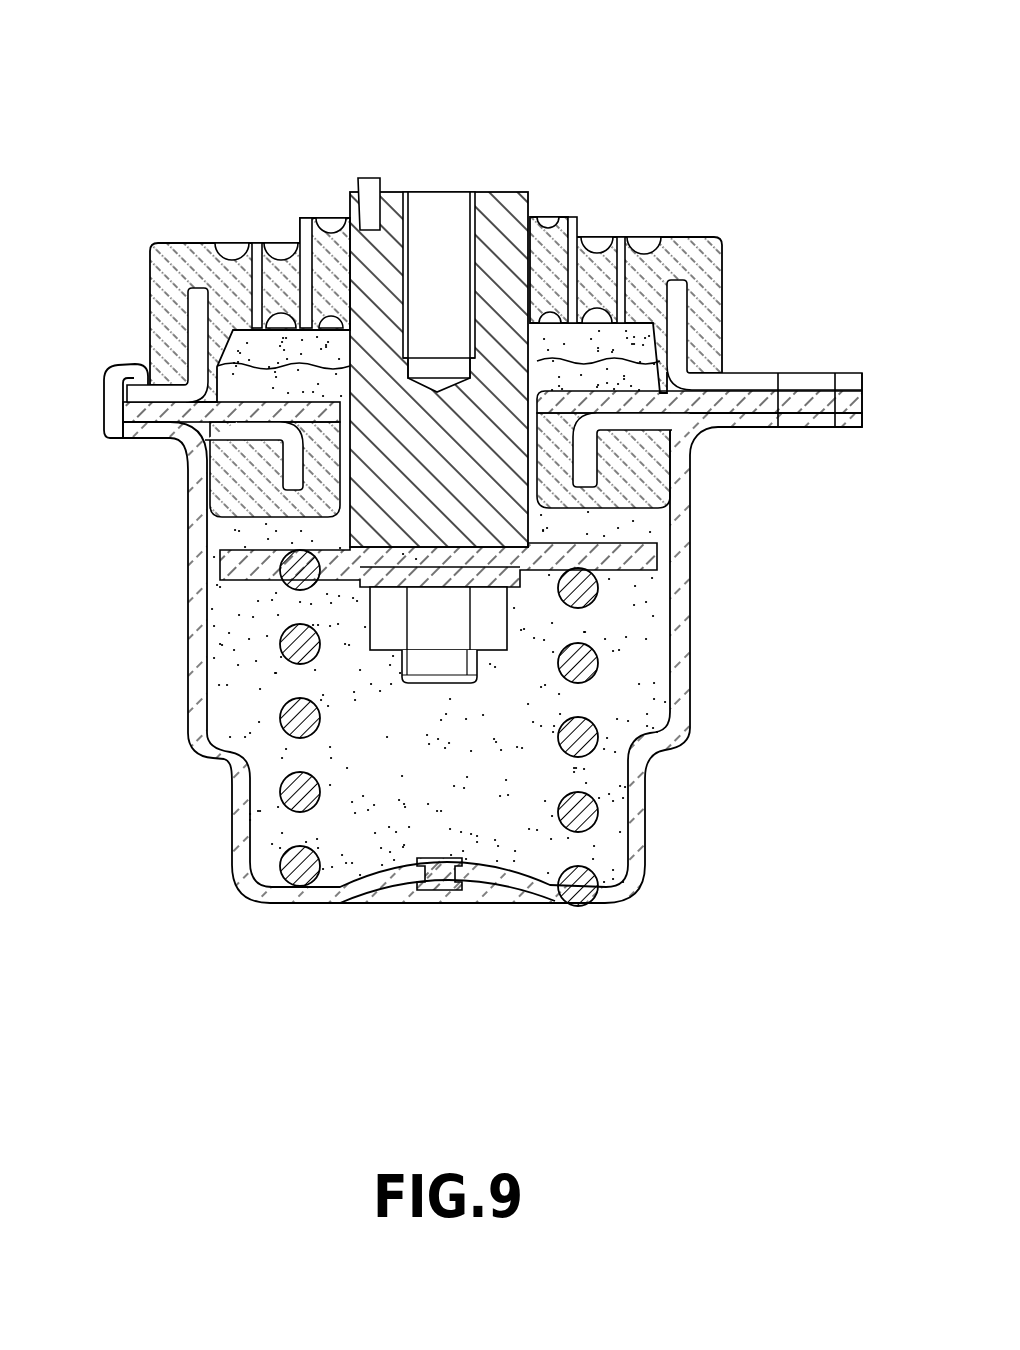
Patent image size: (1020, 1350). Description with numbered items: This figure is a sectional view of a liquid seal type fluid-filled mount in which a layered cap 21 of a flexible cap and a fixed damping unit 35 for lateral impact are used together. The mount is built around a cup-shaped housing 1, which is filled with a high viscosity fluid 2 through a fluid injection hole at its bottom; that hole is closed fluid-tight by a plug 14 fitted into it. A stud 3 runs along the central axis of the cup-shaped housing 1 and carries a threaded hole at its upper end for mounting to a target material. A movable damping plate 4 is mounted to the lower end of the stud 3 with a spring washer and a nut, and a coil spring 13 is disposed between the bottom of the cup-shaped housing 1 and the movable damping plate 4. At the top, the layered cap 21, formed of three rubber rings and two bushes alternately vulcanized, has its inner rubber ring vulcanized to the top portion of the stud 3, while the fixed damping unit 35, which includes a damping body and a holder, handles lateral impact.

The cup-shaped housing 1 is at (680, 632).
The high viscosity fluid 2 is at (633, 707).
The stud 3 is at (498, 212).
The movable damping plate 4 is at (235, 560).
The coil spring 13 is at (300, 793).
The plug 14 is at (435, 888).
The layered cap 21 is at (606, 216).
The fixed damping unit for lateral impact 35 is at (711, 486).